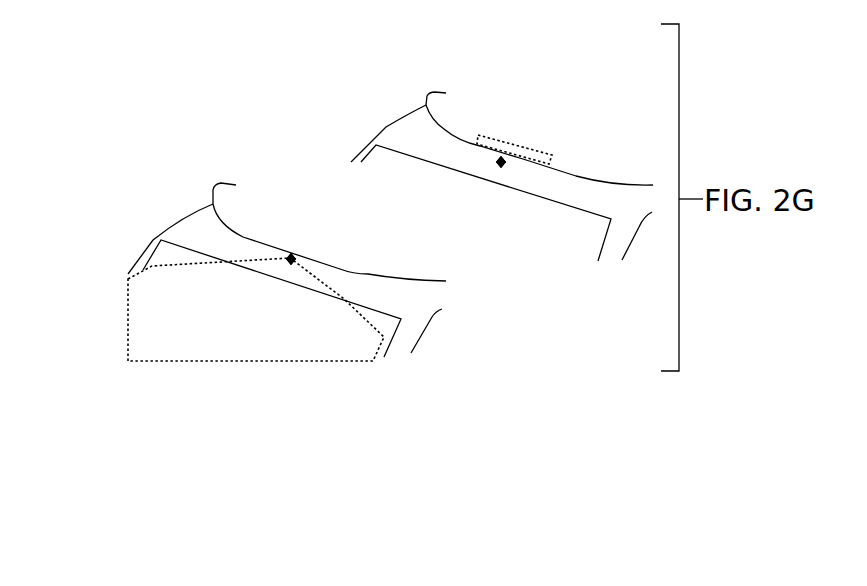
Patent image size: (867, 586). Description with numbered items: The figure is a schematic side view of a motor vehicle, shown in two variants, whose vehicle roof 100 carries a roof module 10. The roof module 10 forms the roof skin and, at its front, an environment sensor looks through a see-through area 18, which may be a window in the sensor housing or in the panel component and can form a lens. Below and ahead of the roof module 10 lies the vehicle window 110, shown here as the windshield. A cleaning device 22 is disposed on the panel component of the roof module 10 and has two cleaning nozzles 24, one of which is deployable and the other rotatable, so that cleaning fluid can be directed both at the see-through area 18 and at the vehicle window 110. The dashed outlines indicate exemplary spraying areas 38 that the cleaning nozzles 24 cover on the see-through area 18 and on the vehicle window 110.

The vehicle roof 100 is at (180, 225).
The roof module 10 is at (241, 197).
The vehicle window 110 is at (189, 289).
The see-through area 18 is at (291, 252).
The cleaning device 22 is at (288, 262).
The cleaning nozzle 24 is at (396, 210).
The spraying area 38 is at (351, 304).